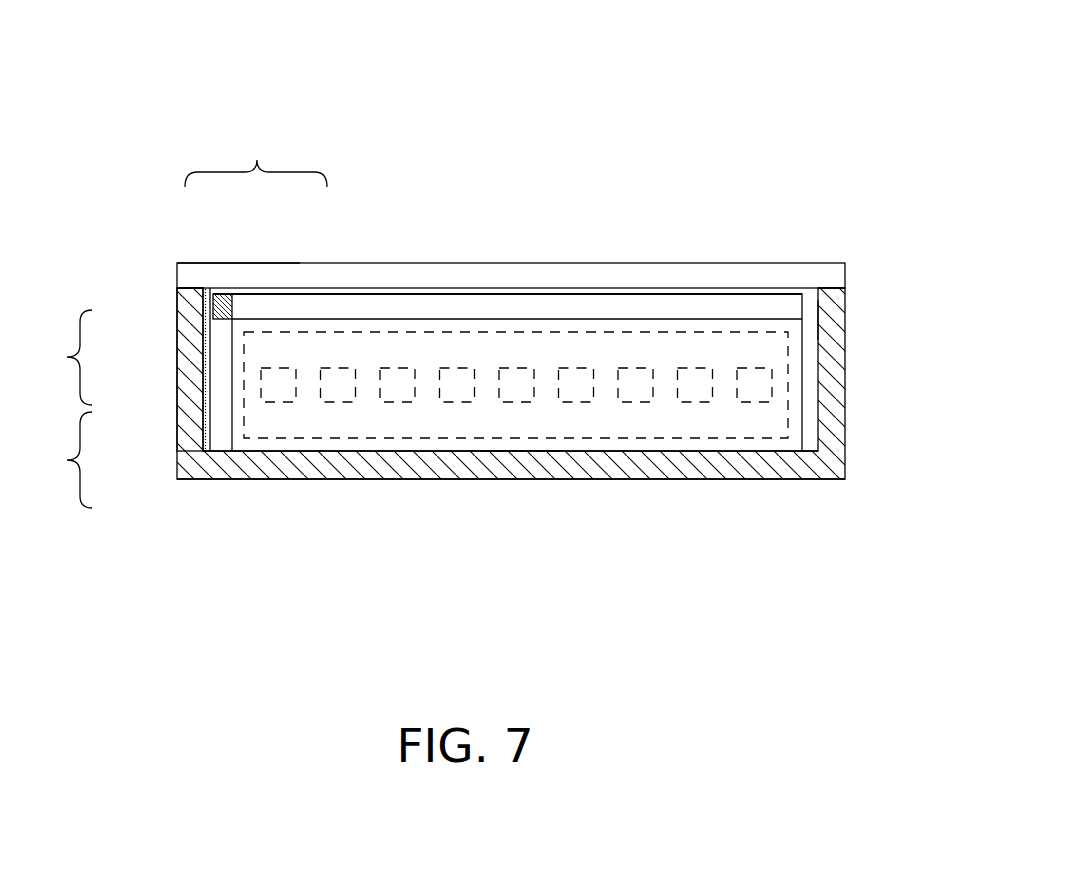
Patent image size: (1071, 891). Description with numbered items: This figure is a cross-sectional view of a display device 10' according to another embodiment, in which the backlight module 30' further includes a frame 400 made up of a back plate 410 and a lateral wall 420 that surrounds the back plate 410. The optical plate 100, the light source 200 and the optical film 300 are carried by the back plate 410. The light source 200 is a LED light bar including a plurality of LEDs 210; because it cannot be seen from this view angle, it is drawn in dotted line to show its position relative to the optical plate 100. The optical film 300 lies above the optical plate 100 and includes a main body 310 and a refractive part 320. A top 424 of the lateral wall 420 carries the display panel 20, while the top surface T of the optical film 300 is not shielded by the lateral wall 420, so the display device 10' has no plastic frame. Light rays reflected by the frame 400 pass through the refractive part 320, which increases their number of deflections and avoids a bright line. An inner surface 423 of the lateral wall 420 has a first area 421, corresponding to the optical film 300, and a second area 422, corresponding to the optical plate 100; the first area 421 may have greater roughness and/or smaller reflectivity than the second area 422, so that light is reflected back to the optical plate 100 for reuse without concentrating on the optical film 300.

The display device 10' is at (549, 137).
The display panel 20 is at (573, 278).
The top surface T is at (657, 294).
The backlight module 30' is at (871, 286).
The optical film 300 is at (257, 160).
The main body 310 is at (288, 294).
The refractive part 320 is at (223, 293).
The LEDs 210 is at (465, 367).
The light source 200 is at (448, 420).
The optical plate 100 is at (519, 448).
The frame 400 is at (67, 460).
The back plate 410 is at (214, 468).
The lateral wall 420 is at (192, 428).
The first area 421 is at (187, 298).
The second area 422 is at (204, 375).
The inner surface 423 is at (67, 357).
The top 424 is at (187, 288).